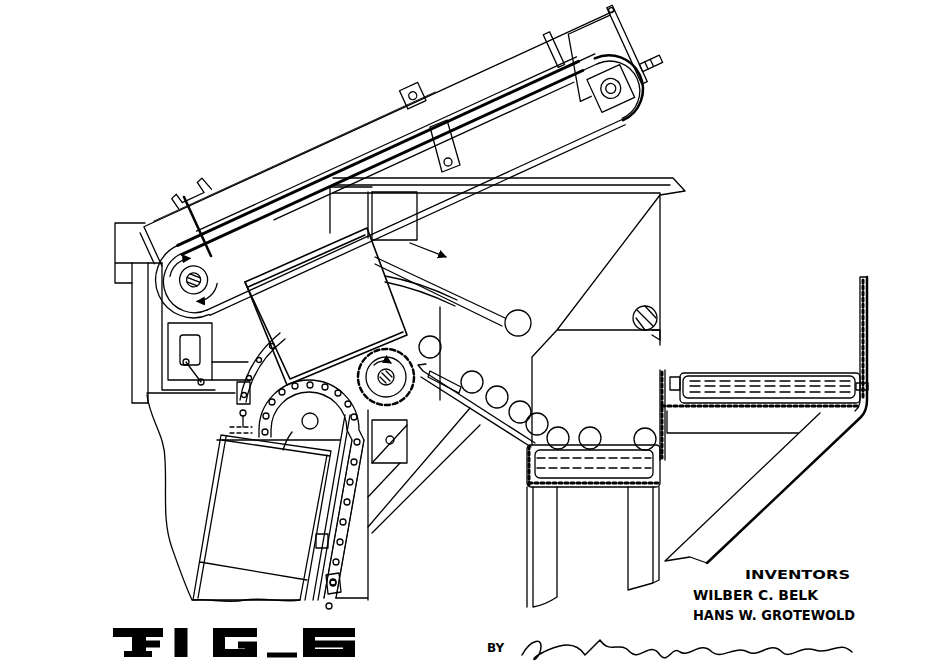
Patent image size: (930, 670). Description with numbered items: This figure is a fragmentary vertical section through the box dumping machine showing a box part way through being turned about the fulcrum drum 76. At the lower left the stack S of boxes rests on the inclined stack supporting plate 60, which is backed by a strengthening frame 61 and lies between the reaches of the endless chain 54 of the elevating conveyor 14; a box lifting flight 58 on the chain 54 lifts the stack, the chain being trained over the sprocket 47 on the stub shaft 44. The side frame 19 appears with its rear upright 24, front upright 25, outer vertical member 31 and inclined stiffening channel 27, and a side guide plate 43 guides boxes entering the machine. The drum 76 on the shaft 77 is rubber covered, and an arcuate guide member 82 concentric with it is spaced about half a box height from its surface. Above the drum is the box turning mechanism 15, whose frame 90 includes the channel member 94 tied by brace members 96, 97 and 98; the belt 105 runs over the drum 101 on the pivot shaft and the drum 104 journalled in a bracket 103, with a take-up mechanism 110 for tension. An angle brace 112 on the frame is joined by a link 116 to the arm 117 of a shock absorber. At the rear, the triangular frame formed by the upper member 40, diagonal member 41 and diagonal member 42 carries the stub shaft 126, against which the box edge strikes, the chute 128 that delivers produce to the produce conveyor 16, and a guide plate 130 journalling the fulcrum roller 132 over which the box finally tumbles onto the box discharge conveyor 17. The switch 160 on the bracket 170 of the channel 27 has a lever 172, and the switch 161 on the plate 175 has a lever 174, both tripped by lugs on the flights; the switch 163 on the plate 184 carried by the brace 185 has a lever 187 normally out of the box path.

The elevating conveyor 14 is at (372, 533).
The box turning mechanism 15 is at (337, 140).
The produce conveyor 16 is at (612, 443).
The box discharge conveyor 17 is at (709, 372).
The side frame 19 is at (130, 226).
The upright member 24 is at (367, 568).
The upright member 25 is at (153, 305).
The inclined stiffening channel 27 is at (275, 372).
The vertical member 31 is at (141, 360).
The upper member 40 is at (637, 183).
The diagonal member 41 is at (403, 493).
The diagonal member 42 is at (473, 303).
The side guide plate 43 is at (156, 417).
The stub shaft 44 is at (310, 429).
The sprocket 47 is at (289, 432).
The endless chain 54 is at (371, 552).
The box lifting flight 58 is at (361, 584).
The stack supporting plate 60 is at (336, 508).
The strengthening frame 61 is at (313, 538).
The fulcrum drum 76 is at (428, 370).
The shaft 77 is at (400, 386).
The arcuate guide member 82 is at (268, 347).
The frame 90 is at (467, 78).
The channel member 94 is at (286, 170).
The brace member 96 is at (214, 186).
The brace member 97 is at (549, 44).
The brace member 98 is at (630, 13).
The drum 101 is at (207, 262).
The bracket 103 is at (622, 48).
The drum 104 is at (645, 104).
The belt 105 is at (534, 155).
The take-up mechanism 110 is at (662, 69).
The angle brace 112 is at (411, 88).
The link 116 is at (448, 147).
The arm 117 is at (372, 194).
The stub shaft 126 is at (521, 310).
The chute 128 is at (516, 390).
The guide plate 130 is at (616, 275).
The fulcrum roller 132 is at (660, 318).
The switch 160 is at (236, 400).
The switch 161 is at (418, 464).
The switch 163 is at (182, 345).
The bracket 170 is at (239, 416).
The switch actuating lever 172 is at (229, 426).
The switch actuating lever 174 is at (432, 434).
The plate 175 is at (401, 487).
The plate 184 is at (173, 331).
The brace 185 is at (281, 391).
The switch actuating lever 187 is at (190, 373).
The stack S is at (207, 510).